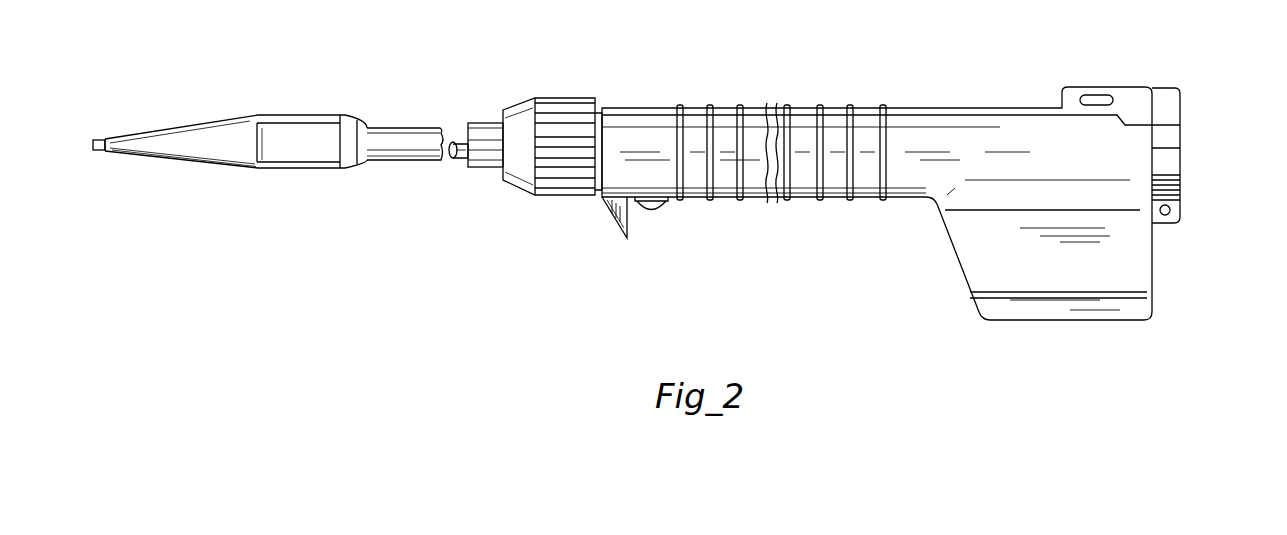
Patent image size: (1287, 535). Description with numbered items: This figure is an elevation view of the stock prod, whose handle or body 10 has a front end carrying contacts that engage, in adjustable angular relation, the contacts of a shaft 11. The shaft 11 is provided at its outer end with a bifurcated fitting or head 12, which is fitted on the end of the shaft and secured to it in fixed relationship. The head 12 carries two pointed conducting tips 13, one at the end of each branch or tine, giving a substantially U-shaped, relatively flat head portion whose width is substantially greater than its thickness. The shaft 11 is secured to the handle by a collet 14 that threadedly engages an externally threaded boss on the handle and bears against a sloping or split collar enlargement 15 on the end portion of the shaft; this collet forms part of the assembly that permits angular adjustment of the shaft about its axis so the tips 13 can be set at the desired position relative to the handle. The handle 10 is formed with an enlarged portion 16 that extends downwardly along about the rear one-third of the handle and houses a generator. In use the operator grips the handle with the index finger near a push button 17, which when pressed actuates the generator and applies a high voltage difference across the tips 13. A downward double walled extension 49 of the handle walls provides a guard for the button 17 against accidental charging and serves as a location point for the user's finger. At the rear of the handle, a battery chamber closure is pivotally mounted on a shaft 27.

The handle 10 is at (826, 91).
The shaft 11 is at (413, 128).
The bifurcated fitting 12 is at (316, 128).
The pointed conducting tips 13 is at (94, 145).
The collet 14 is at (565, 110).
The split collar enlargement 15 is at (480, 133).
The enlarged portion 16 is at (977, 238).
The push button 17 is at (648, 213).
The shaft 27 is at (1183, 211).
The double walled extension 49 is at (618, 227).